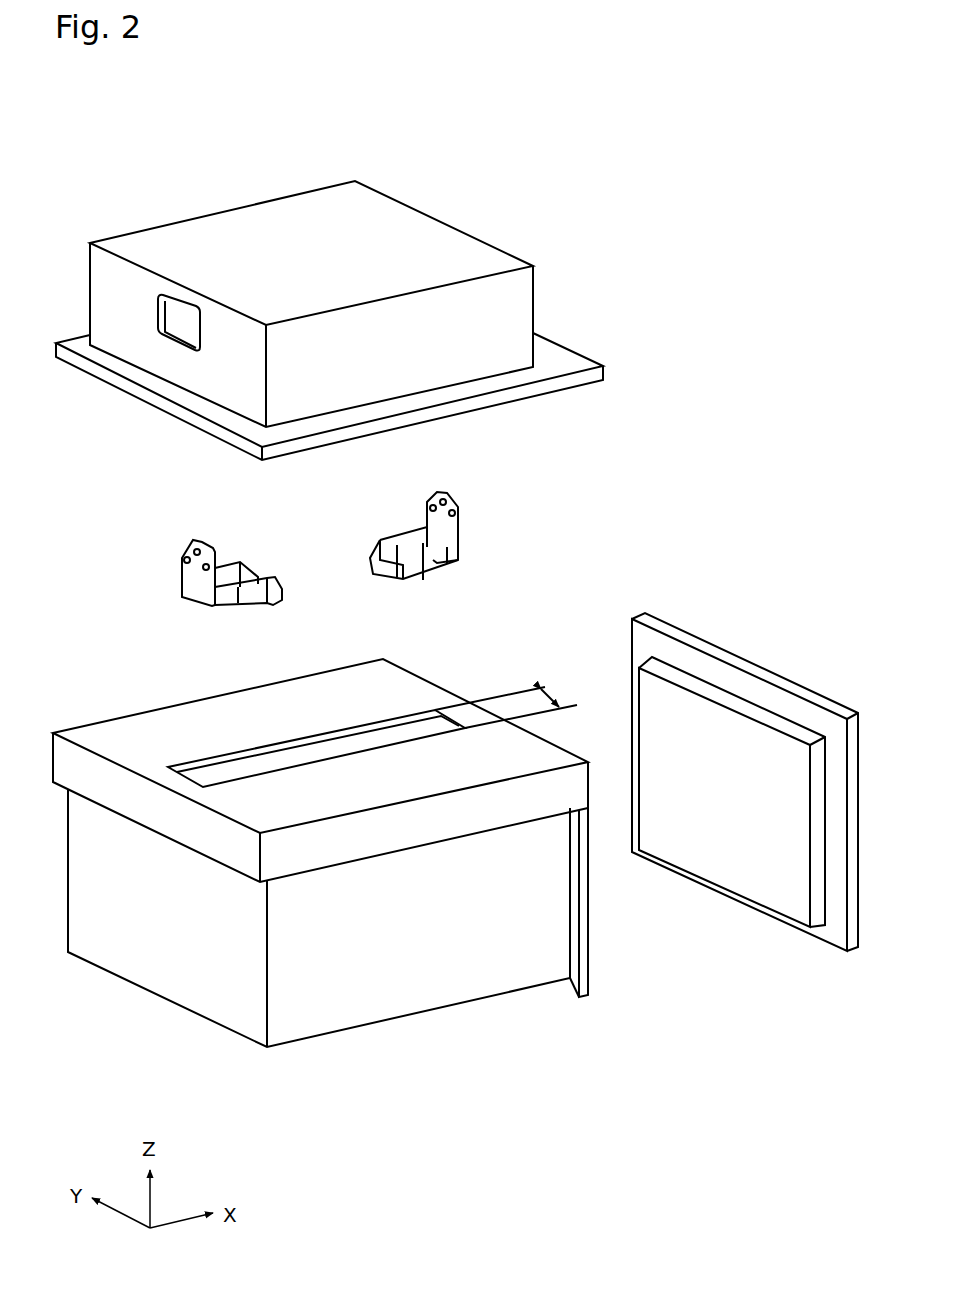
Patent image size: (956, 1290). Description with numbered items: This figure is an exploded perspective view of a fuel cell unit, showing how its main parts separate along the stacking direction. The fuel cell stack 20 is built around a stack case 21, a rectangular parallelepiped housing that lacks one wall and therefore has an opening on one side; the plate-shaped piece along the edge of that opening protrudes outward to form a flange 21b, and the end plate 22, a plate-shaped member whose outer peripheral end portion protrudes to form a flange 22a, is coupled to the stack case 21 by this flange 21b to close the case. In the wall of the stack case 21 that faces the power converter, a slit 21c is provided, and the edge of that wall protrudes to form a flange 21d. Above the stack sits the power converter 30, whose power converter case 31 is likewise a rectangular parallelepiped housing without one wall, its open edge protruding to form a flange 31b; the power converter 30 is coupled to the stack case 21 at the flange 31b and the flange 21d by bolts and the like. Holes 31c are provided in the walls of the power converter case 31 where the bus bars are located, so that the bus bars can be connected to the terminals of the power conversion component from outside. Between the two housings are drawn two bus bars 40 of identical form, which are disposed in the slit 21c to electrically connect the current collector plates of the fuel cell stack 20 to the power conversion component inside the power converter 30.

The fuel cell stack 20 is at (128, 640).
The stack case 21 is at (227, 1005).
The flange 21b is at (567, 988).
The slit 21c is at (407, 735).
The flange 21d is at (83, 735).
The end plate 22 is at (633, 608).
The flange 22a is at (832, 932).
The power converter 30 is at (165, 170).
The power converter case 31 is at (403, 227).
The flange 31b is at (553, 366).
The hole 31c is at (178, 322).
The bus bar 40 is at (168, 545).